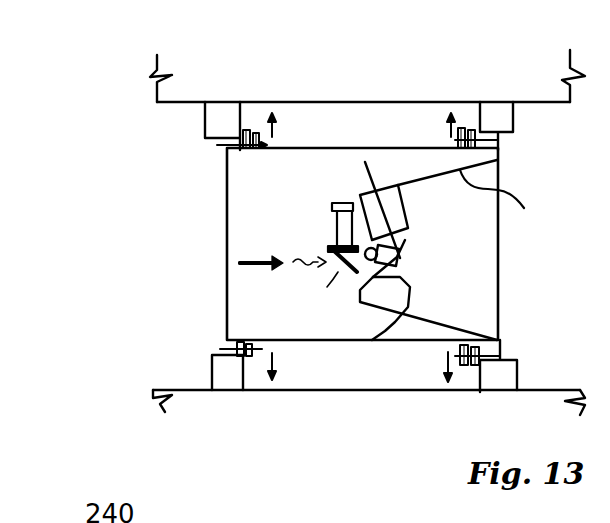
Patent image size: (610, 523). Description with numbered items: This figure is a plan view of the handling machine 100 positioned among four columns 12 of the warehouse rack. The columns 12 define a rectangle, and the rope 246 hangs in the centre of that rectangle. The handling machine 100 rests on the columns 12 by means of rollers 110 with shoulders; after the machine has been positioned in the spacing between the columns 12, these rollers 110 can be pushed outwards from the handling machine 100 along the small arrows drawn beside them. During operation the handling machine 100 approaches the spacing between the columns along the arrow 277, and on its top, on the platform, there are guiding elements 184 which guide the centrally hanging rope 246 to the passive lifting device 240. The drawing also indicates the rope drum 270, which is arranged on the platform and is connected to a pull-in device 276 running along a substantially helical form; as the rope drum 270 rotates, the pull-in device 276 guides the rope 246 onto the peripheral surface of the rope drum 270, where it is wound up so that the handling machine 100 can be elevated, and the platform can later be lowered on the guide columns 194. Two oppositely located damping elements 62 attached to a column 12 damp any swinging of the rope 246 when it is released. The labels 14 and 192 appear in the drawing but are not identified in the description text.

The column 12 is at (203, 117).
The rail / frame member 14 is at (332, 80).
The damping element 62 is at (510, 196).
The handling machine 100 is at (206, 241).
The roller with shoulders 110 is at (240, 137).
The guiding element 184 is at (400, 215).
The element 192 is at (21, 332).
The guide column 194 is at (21, 388).
The passive lifting device 240 is at (283, 249).
The rope 246 is at (408, 272).
The rope drum 270 is at (335, 235).
The pull-in device 276 is at (350, 263).
The arrow 277 is at (250, 268).